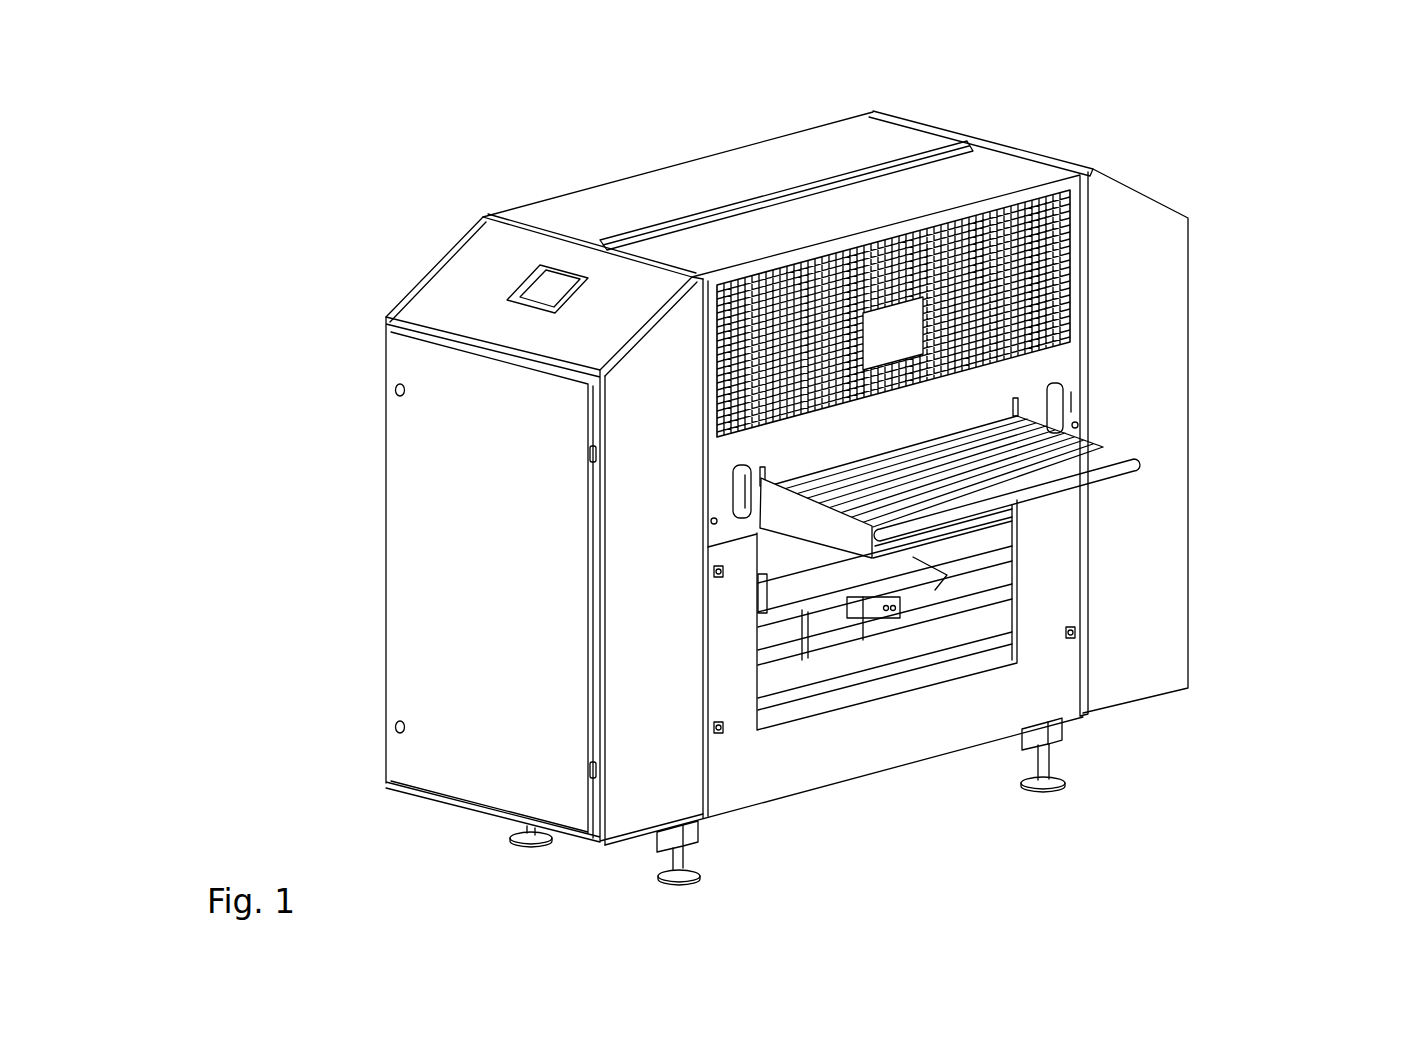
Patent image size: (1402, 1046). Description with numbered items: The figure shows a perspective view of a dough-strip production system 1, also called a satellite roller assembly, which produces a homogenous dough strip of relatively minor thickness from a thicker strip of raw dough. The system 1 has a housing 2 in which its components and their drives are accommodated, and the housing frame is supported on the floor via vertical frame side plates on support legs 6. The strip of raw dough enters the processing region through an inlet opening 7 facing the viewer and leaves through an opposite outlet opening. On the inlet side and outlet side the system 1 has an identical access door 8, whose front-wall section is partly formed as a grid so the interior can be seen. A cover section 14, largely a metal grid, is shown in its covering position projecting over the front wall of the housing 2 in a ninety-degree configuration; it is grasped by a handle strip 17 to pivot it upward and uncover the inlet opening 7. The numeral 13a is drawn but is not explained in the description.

The dough-strip production system 1 is at (1078, 134).
The housing 2 is at (1200, 395).
The support legs 6 is at (686, 857).
The inlet opening 7 is at (763, 653).
The access door 8 is at (732, 224).
The handle 13a is at (732, 502).
The cover section 14 is at (1130, 460).
The handle strip 17 is at (1095, 483).